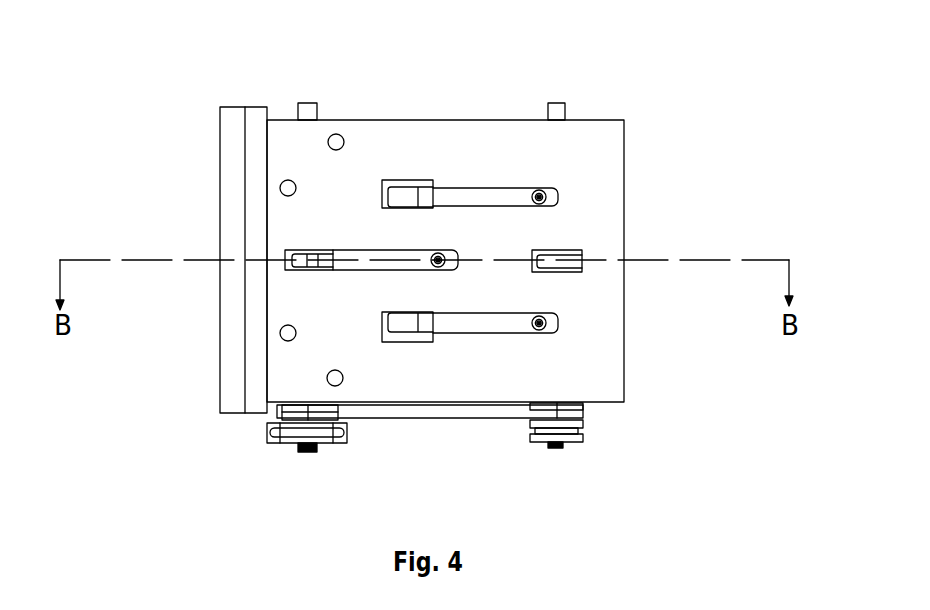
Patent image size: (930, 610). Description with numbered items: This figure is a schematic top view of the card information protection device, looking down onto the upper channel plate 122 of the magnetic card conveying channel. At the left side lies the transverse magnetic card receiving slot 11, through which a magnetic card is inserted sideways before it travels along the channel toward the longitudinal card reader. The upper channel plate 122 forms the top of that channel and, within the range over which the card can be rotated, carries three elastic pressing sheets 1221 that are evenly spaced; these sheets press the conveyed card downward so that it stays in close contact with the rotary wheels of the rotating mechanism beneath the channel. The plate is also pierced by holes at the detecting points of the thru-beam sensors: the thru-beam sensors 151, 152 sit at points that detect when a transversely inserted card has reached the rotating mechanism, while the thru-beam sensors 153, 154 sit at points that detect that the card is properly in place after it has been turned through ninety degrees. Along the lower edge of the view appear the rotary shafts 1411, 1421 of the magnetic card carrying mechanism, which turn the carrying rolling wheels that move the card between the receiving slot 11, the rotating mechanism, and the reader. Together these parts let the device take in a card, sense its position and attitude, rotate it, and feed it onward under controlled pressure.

The transverse magnetic card receiving slot 11 is at (233, 163).
The upper channel plate 122 is at (588, 150).
The elastic pressing sheet 1221 is at (372, 257).
The thru-beam sensor 151 is at (339, 383).
The thru-beam sensor 152 is at (337, 141).
The thru-beam sensor 153 is at (280, 190).
The thru-beam sensor 154 is at (280, 335).
The rotary shaft 1411 is at (300, 452).
The rotary shaft 1421 is at (561, 448).